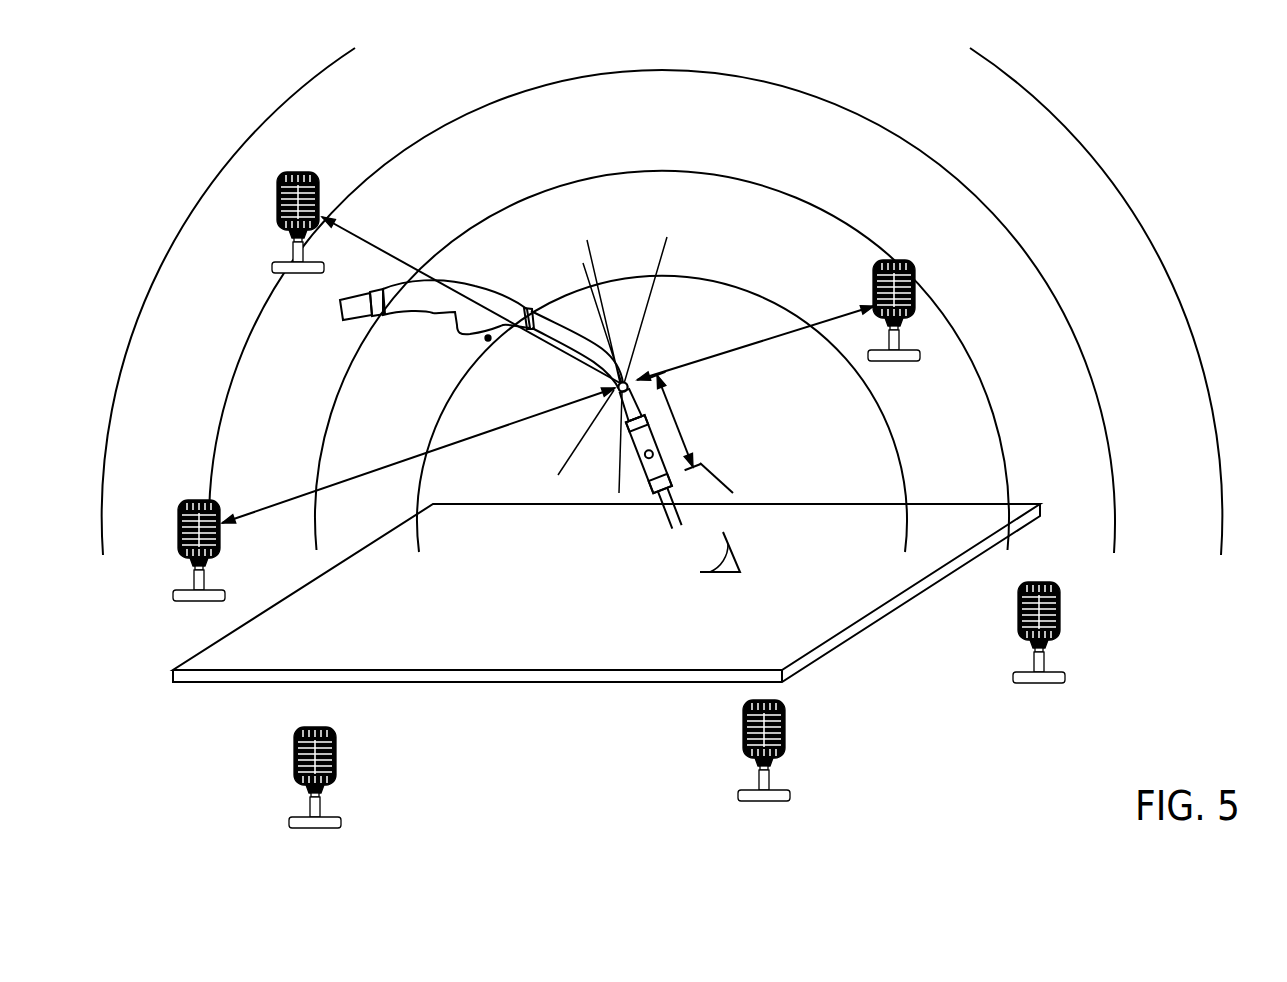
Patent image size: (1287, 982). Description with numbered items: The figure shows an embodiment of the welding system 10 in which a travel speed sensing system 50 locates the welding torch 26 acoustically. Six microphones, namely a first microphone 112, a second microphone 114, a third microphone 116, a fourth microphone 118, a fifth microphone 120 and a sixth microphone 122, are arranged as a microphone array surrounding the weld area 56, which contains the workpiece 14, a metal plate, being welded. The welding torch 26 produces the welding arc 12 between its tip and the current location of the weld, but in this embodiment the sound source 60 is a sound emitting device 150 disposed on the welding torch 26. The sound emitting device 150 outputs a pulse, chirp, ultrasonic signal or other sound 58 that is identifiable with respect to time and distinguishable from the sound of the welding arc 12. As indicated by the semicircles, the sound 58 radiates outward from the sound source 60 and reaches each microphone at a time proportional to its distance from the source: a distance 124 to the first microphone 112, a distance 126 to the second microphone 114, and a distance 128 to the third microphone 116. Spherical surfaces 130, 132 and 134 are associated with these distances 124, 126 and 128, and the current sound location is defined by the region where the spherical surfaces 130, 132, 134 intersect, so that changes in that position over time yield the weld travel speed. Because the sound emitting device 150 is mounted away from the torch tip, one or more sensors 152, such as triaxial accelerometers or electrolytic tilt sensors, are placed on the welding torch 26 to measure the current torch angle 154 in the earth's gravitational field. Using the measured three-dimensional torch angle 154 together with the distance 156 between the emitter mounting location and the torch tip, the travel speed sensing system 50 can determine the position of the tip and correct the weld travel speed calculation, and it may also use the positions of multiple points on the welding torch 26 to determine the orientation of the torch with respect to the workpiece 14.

The welding system 10 is at (203, 121).
The welding arc 12 is at (684, 522).
The workpiece 14 is at (480, 682).
The welding torch 26 is at (460, 300).
The travel speed sensing system 50 is at (1100, 121).
The weld area 56 is at (1025, 347).
The sound 58 is at (715, 279).
The sound source 60 is at (630, 377).
The sound emitting device 150 is at (623, 387).
The first microphone 112 is at (905, 258).
The second microphone 114 is at (277, 205).
The third microphone 116 is at (178, 530).
The fourth microphone 118 is at (295, 758).
The fifth microphone 120 is at (743, 733).
The sixth microphone 122 is at (1018, 614).
The distance 124 is at (767, 343).
The distance 126 is at (380, 243).
The distance 128 is at (372, 466).
The spherical surface 130 is at (717, 476).
The spherical surface 132 is at (570, 452).
The spherical surface 134 is at (618, 486).
The sensor 152 is at (645, 461).
The torch angle 154 is at (712, 552).
The distance 156 is at (678, 417).